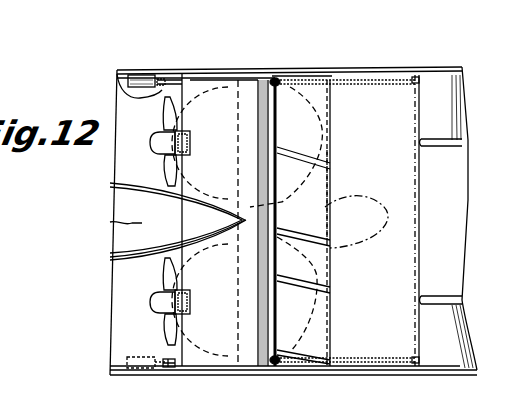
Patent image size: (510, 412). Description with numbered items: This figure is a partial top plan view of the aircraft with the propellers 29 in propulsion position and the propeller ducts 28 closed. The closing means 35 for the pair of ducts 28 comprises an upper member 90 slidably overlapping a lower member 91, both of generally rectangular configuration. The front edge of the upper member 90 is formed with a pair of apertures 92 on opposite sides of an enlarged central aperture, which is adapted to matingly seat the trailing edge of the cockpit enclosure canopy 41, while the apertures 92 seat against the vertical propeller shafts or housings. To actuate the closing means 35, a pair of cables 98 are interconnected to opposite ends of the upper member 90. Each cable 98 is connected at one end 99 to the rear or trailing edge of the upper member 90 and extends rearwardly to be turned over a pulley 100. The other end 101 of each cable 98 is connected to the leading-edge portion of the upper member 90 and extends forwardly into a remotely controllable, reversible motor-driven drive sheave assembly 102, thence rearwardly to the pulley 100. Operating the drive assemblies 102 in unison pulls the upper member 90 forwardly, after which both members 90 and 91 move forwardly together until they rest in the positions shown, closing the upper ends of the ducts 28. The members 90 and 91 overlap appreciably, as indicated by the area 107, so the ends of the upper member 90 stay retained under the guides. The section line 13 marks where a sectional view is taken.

The drive sheave assembly 102 is at (140, 74).
The cable end 101 is at (182, 72).
The upper member 90 is at (207, 83).
The overlap area 107 is at (271, 80).
The cable end 99 is at (278, 86).
The cable 98 is at (369, 85).
The pulley 100 is at (415, 76).
The duct 28 is at (200, 221).
The propeller 29 is at (160, 142).
The aperture 92 is at (333, 142).
The lower member 91 is at (323, 180).
The closing means 35 is at (340, 200).
The cockpit enclosure canopy 41 is at (112, 221).
The section line 13 is at (270, 362).